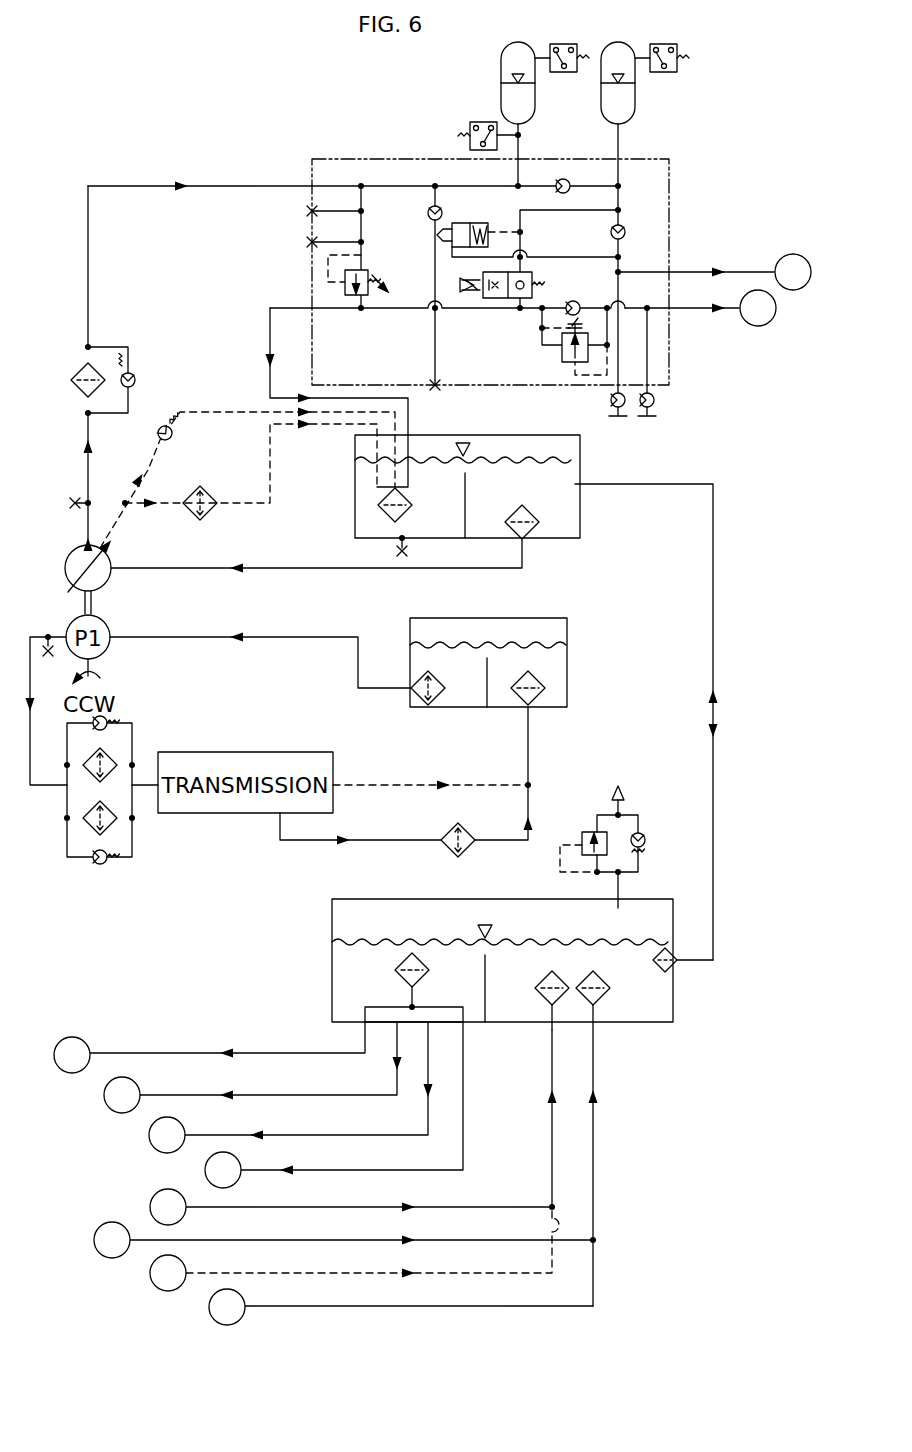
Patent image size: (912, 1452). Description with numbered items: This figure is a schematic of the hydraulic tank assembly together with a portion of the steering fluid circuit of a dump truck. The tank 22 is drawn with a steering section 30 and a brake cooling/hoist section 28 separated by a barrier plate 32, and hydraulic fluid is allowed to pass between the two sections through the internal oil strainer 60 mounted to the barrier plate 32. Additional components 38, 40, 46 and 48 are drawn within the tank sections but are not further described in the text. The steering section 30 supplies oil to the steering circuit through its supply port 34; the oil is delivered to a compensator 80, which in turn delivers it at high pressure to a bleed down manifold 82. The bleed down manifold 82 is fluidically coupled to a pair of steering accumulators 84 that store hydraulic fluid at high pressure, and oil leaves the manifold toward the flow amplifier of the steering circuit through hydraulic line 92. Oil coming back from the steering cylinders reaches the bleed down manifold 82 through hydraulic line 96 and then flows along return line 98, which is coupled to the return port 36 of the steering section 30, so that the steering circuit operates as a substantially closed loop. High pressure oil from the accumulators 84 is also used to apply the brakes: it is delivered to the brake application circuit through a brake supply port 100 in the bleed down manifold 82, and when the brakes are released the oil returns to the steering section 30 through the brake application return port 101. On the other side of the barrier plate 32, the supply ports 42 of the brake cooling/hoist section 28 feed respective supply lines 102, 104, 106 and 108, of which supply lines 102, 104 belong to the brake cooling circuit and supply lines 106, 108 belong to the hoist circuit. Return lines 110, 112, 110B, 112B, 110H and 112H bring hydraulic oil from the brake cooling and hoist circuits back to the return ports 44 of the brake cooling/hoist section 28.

The tank 22 is at (556, 532).
The brake cooling/hoist section 28 is at (332, 925).
The steering section 30 is at (570, 518).
The barrier plate 32 is at (592, 472).
The supply port 34 is at (524, 546).
The return port 36 is at (386, 492).
The filter 38 is at (78, 372).
The return filter 40 is at (378, 506).
The supply ports 42 is at (396, 1026).
The return ports 44 is at (552, 1028).
The filter 46 is at (395, 971).
The return filter 48 is at (562, 984).
The internal oil strainer 60 is at (667, 980).
The compensator 80 is at (70, 560).
The bleed down manifold 82 is at (676, 190).
The steering accumulators 84 is at (518, 38).
The hydraulic line 92 is at (695, 270).
The hydraulic line 96 is at (695, 312).
The return line 98 is at (268, 382).
The brake supply port 100 is at (446, 396).
The brake application return port 101 is at (398, 552).
The supply line 102 is at (346, 1126).
The supply line 104 is at (305, 1173).
The supply line 106 is at (278, 1060).
The supply line 108 is at (297, 1095).
The return line 110 is at (552, 1172).
The return line 112 is at (596, 1152).
The return line 110B is at (368, 1207).
The return line 112B is at (312, 1240).
The return line 110H is at (288, 1273).
The return line 112H is at (437, 1306).